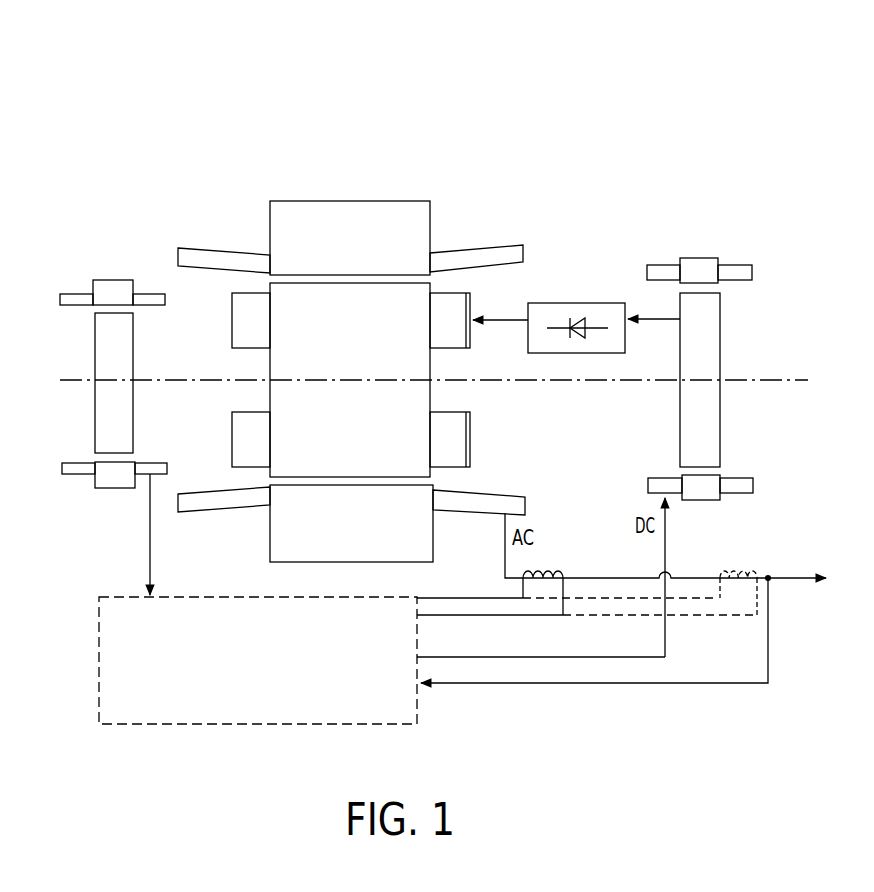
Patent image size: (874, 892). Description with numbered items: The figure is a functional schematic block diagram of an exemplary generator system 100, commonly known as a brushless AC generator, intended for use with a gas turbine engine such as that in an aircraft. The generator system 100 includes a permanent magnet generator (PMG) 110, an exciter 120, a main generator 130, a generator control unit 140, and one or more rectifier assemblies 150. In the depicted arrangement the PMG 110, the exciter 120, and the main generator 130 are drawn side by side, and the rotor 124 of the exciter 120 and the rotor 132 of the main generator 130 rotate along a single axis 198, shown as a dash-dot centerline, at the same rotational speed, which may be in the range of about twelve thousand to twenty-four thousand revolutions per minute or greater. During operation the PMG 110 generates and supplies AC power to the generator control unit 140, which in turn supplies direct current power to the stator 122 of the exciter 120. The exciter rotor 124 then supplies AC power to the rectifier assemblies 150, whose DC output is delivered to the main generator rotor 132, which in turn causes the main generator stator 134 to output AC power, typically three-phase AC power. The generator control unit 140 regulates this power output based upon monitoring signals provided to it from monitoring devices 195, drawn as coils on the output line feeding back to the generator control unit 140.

The generator system 100 is at (597, 190).
The permanent magnet generator (PMG) 110 is at (108, 135).
The exciter 120 is at (737, 314).
The stator of the exciter 122 is at (753, 487).
The rotor of the exciter 124 is at (720, 318).
The main generator 130 is at (351, 306).
The main generator rotor 132 is at (433, 373).
The main generator stator 134 is at (435, 540).
The generator control unit 140 is at (109, 595).
The rectifier assemblies 150 is at (588, 353).
The monitoring devices 195 is at (522, 590).
The axis 198 is at (805, 380).